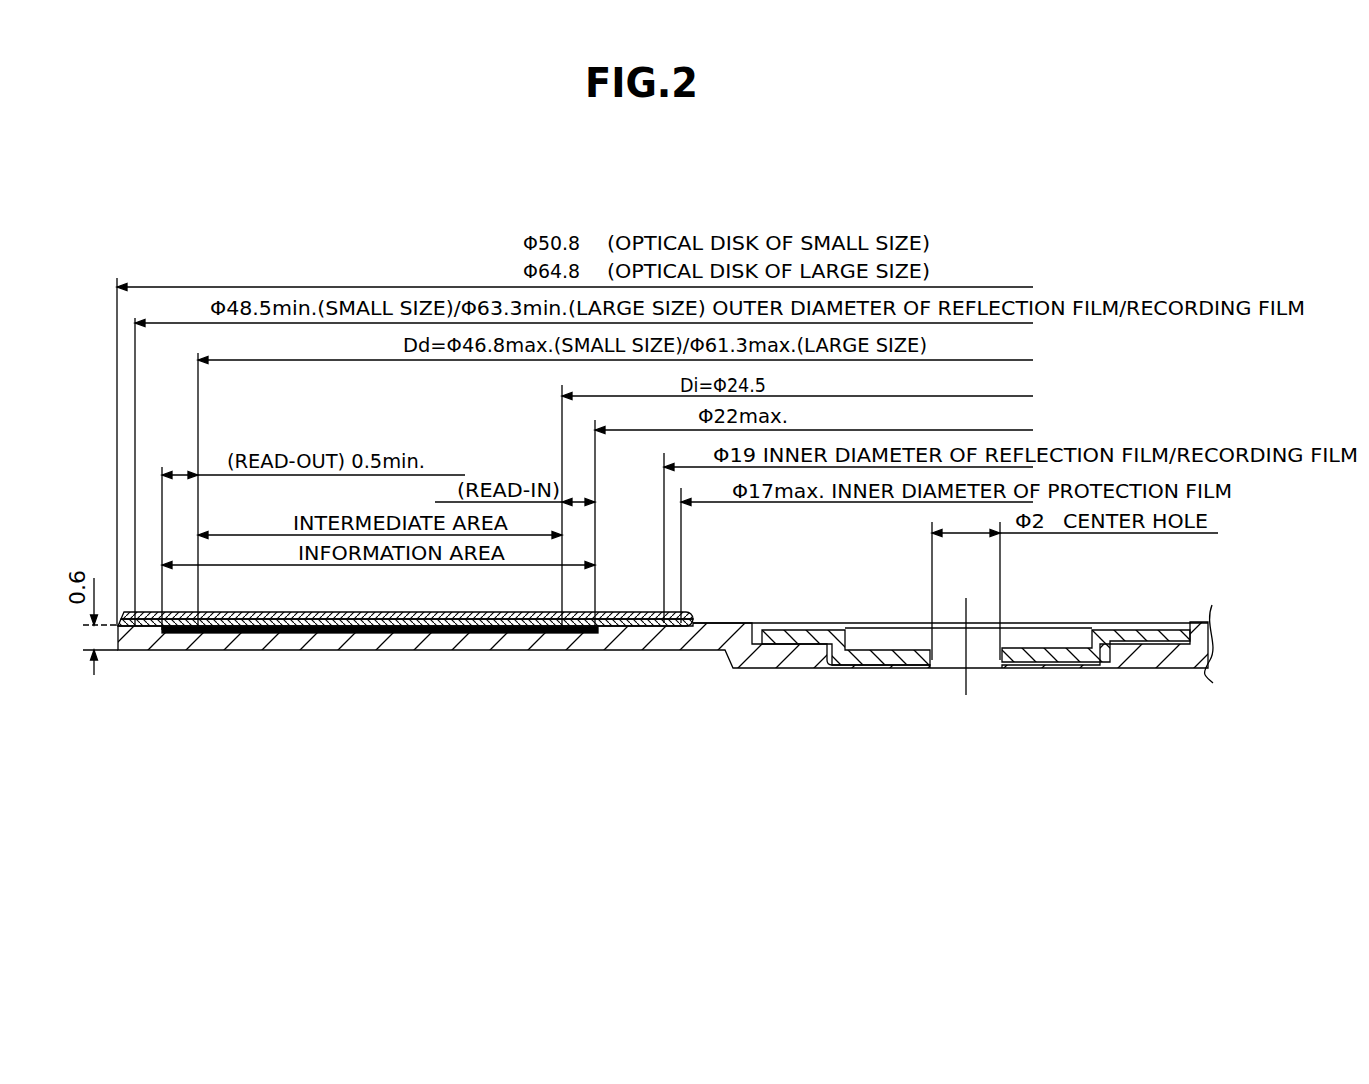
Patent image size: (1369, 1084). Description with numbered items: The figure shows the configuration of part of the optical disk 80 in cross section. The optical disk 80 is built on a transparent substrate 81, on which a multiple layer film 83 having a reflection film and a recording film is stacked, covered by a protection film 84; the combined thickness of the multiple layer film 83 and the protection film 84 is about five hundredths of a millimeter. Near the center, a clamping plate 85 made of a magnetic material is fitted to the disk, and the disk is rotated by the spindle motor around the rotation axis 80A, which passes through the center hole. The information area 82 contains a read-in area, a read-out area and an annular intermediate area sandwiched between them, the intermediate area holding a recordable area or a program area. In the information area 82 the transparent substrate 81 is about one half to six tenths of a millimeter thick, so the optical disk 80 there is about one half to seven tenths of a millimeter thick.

The optical disk 80 is at (317, 743).
The rotation axis 80A is at (966, 680).
The transparent substrate 81 is at (288, 645).
The information area 82 is at (395, 634).
The multiple layer film 83 is at (295, 614).
The protection film 84 is at (405, 613).
The clamping plate 85 is at (782, 630).